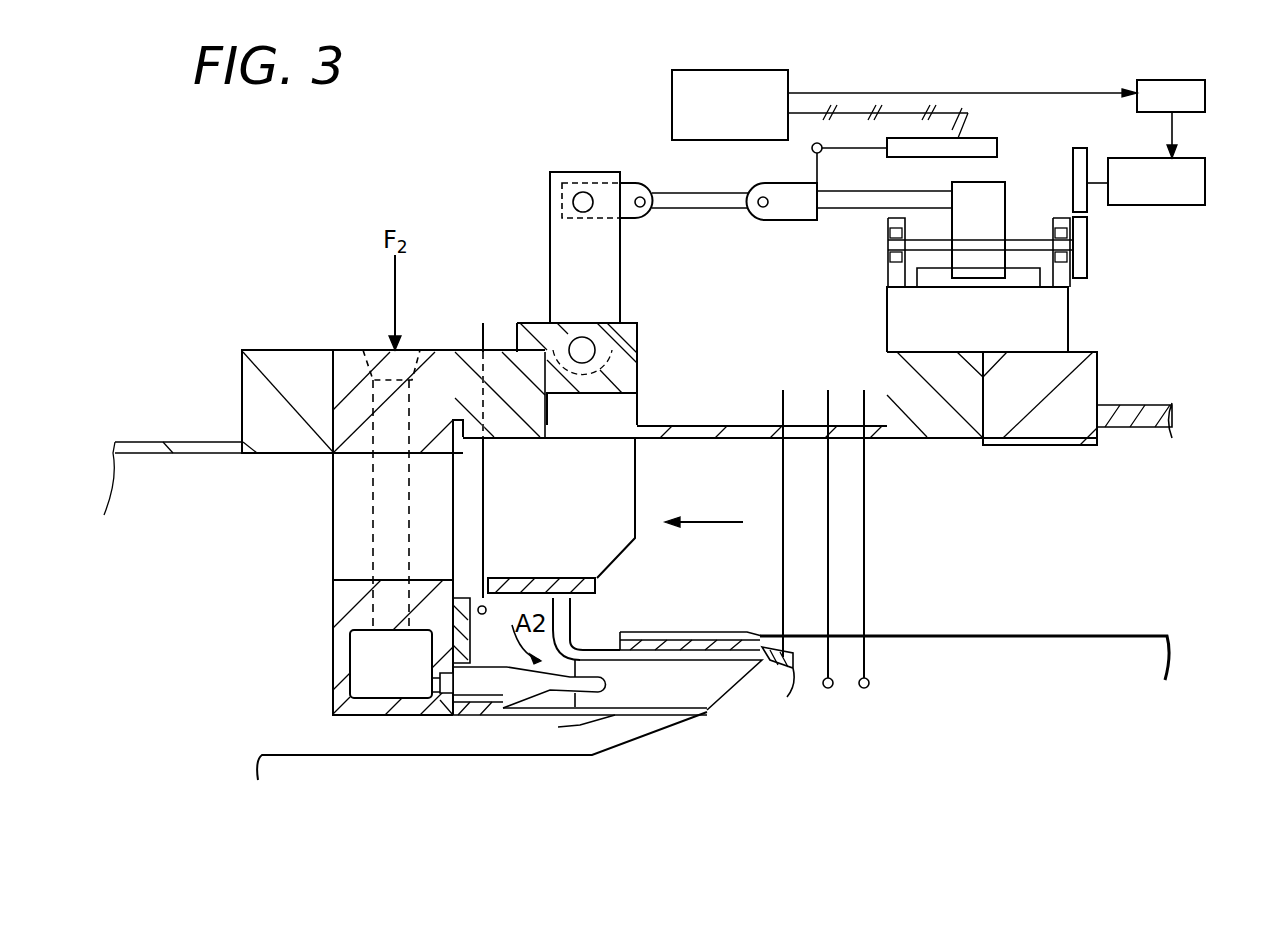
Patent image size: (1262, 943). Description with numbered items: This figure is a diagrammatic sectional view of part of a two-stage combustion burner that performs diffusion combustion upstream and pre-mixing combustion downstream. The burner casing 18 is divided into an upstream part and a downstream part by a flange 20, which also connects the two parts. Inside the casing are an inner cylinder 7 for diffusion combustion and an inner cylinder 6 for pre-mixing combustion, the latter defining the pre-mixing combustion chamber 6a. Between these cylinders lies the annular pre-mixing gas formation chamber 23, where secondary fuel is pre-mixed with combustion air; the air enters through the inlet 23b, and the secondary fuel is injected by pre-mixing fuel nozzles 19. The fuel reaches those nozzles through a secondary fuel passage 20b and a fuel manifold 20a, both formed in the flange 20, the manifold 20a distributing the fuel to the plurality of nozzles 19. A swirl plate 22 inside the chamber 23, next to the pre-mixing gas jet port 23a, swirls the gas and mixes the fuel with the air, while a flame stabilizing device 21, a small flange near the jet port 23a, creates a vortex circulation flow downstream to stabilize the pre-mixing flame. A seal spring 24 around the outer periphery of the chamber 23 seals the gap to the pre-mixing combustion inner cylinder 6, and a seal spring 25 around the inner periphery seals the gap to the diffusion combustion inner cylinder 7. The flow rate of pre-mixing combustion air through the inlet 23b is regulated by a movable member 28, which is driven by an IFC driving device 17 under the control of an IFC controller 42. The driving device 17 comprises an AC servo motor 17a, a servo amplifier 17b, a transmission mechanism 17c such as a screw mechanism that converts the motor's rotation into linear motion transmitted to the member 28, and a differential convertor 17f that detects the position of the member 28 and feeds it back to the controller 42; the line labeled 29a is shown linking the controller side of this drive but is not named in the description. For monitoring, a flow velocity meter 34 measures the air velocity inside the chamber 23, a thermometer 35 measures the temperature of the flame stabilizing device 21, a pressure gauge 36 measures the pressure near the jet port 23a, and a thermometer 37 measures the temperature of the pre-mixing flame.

The inner cylinder for pre-mixing combustion 6 is at (935, 640).
The pre-mixing combustion chamber 6a is at (1048, 730).
The inner cylinder for diffusion combustion 7 is at (395, 757).
The IFC driving device 17 is at (980, 285).
The AC servo motor 17a is at (1165, 196).
The servo amplifier 17b is at (1192, 93).
The transmission mechanism 17c is at (1000, 187).
The differential convertor 17f is at (993, 140).
The burner casing 18 is at (271, 356).
The pre-mixing fuel nozzle 19 is at (551, 692).
The flange 20 is at (445, 350).
The fuel manifold 20a is at (362, 652).
The secondary fuel passage 20b is at (372, 546).
The flame stabilizing device 21 is at (782, 700).
The swirl plate 22 is at (680, 695).
The pre-mixing gas formation chamber 23 is at (503, 714).
The pre-mixing gas jet port 23a is at (712, 712).
The inlet 23b is at (553, 603).
The seal spring 24 is at (645, 636).
The seal spring 25 is at (605, 735).
The movable member 28 is at (512, 578).
The signal line 29a is at (907, 112).
The flow velocity meter 34 is at (486, 614).
The thermometer 35 is at (777, 636).
The pressure gauge 36 is at (887, 558).
The thermometer 37 is at (816, 558).
The IFC controller 42 is at (904, 105).